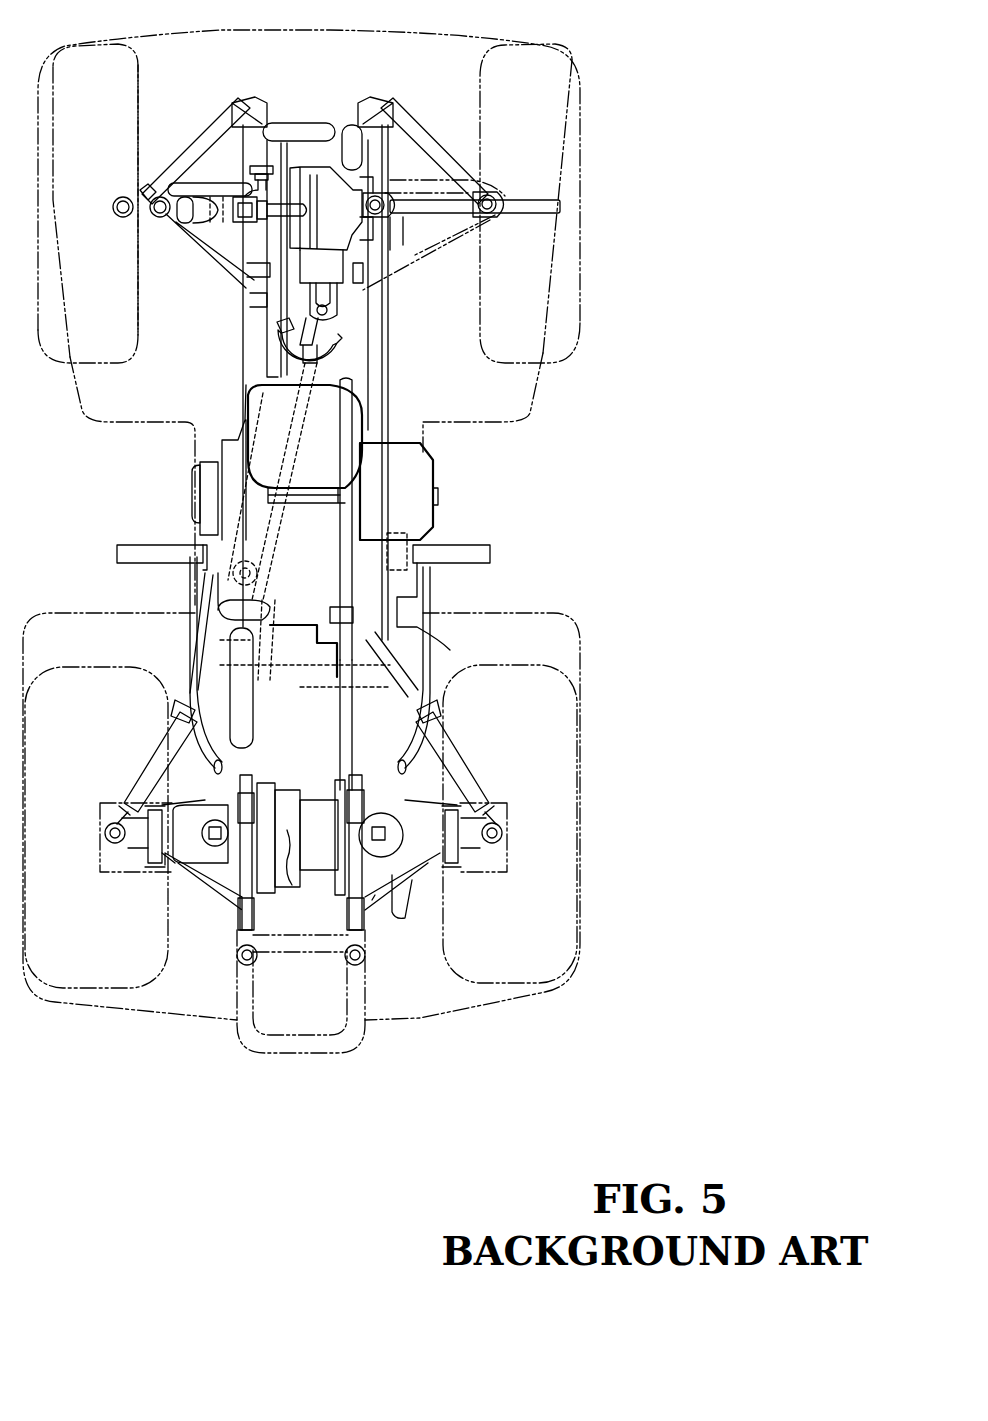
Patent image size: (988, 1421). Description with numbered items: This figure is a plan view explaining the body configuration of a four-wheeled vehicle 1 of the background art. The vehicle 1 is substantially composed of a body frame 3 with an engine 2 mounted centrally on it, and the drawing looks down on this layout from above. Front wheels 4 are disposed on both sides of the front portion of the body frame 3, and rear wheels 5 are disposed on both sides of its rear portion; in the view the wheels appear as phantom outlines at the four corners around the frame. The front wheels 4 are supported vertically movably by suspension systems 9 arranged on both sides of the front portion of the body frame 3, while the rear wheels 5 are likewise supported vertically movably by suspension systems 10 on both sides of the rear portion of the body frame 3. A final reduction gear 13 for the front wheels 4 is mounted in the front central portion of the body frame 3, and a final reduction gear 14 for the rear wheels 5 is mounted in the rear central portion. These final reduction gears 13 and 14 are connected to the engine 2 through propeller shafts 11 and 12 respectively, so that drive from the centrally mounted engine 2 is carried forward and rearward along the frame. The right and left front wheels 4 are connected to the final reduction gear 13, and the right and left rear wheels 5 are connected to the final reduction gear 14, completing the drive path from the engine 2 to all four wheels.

The vehicle 1 is at (450, 486).
The engine 2 is at (195, 462).
The body frame 3 is at (357, 617).
The front wheels 4 is at (88, 88).
The rear wheels 5 is at (132, 933).
The suspension systems 9 is at (220, 230).
The suspension systems 10 is at (302, 891).
The propeller shaft 11 is at (283, 333).
The propeller shaft 12 is at (288, 690).
The final reduction gear 13 is at (310, 187).
The final reduction gear 14 is at (299, 873).